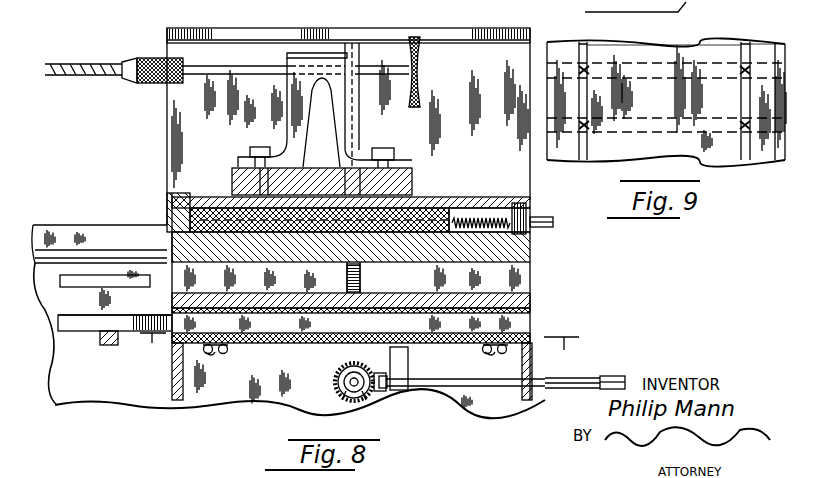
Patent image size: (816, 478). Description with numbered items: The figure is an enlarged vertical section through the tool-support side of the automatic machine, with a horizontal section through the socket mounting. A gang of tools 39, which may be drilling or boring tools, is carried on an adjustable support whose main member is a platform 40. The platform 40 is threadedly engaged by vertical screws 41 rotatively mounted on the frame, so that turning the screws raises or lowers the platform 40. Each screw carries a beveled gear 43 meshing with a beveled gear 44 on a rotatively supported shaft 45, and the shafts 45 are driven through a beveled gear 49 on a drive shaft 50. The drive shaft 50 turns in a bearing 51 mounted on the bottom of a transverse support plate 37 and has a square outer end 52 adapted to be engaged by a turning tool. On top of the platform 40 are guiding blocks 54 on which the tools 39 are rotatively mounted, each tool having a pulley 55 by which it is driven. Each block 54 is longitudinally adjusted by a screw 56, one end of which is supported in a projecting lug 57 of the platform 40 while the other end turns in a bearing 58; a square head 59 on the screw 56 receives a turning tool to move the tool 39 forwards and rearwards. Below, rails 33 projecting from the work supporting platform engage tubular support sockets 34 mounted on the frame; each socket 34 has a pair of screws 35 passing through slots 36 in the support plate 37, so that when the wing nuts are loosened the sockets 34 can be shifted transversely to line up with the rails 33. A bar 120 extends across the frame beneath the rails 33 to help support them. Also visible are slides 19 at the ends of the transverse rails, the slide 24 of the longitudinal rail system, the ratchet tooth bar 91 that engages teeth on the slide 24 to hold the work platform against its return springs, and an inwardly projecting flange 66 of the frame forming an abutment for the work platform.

In FIG. 8, the slides 19 is at (565, 348).
In FIG. 8, the slide 24 is at (62, 282).
In FIG. 8, the rails 33 is at (72, 322).
In FIG. 8, the tubular support sockets 34 is at (532, 302).
In FIG. 9, the tubular support sockets 34 is at (762, 160).
In FIG. 8, the screws 35 is at (215, 353).
In FIG. 9, the screws 35 is at (586, 68).
In FIG. 8, the slots 36 is at (230, 347).
In FIG. 9, the slots 36 is at (580, 46).
In FIG. 8, the transverse support plate 37 is at (296, 346).
In FIG. 9, the transverse support plate 37 is at (682, 44).
In FIG. 8, the tools 39 is at (72, 66).
In FIG. 8, the platform 40 is at (532, 250).
In FIG. 8, the vertical screws 41 is at (361, 279).
In FIG. 8, the beveled gears 43 is at (337, 378).
In FIG. 8, the beveled gears 44 is at (346, 395).
In FIG. 8, the shafts 45 is at (362, 392).
In FIG. 8, the beveled gear 49 is at (378, 396).
In FIG. 8, the drive shaft 50 is at (585, 386).
In FIG. 8, the bearing 51 is at (408, 362).
In FIG. 8, the square outer end 52 is at (612, 377).
In FIG. 8, the guiding blocks 54 is at (420, 206).
In FIG. 8, the pulley 55 is at (422, 88).
In FIG. 8, the screw 56 is at (470, 218).
In FIG. 8, the projecting lug 57 is at (175, 200).
In FIG. 8, the bearing 58 is at (518, 212).
In FIG. 8, the square head 59 is at (548, 218).
In FIG. 8, the inwardly projecting flanges 66 is at (90, 250).
In FIG. 8, the ratchet tooth bar 91 is at (151, 347).
In FIG. 8, the bar 120 is at (108, 338).